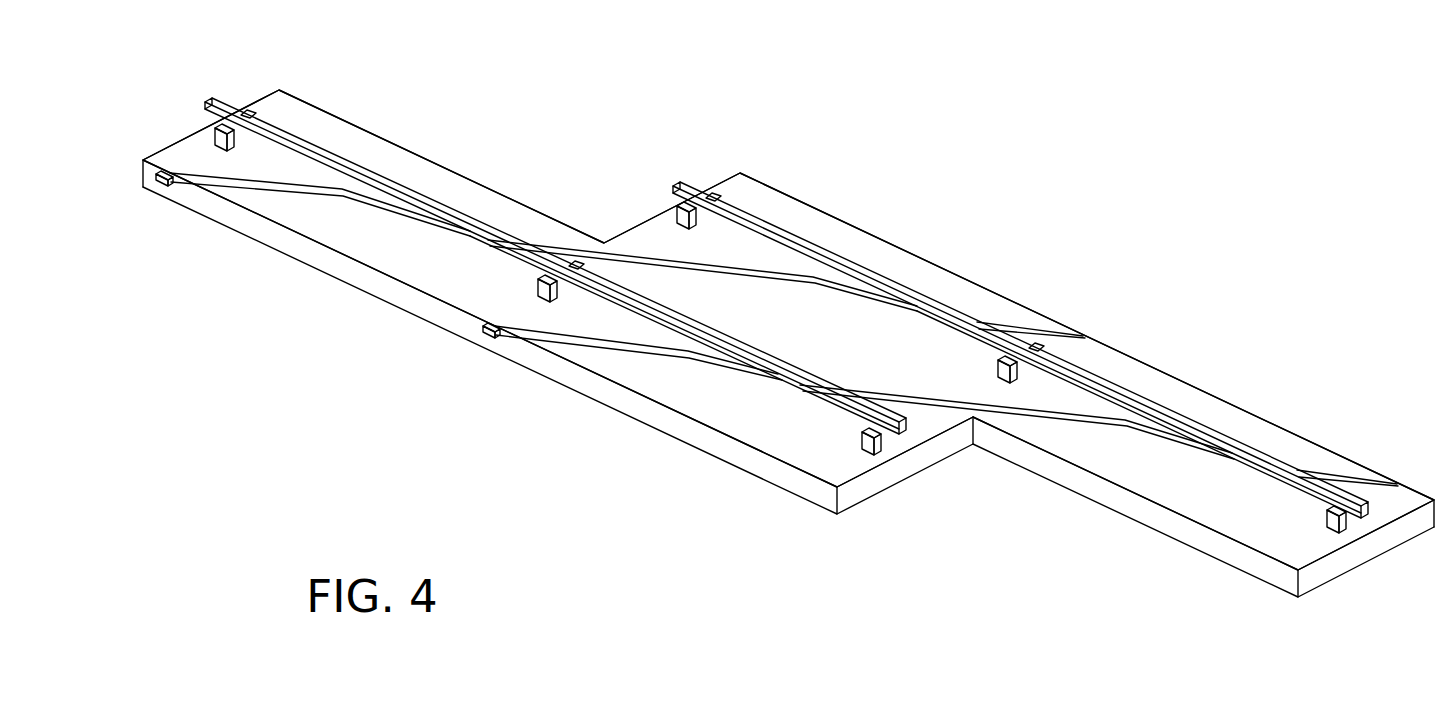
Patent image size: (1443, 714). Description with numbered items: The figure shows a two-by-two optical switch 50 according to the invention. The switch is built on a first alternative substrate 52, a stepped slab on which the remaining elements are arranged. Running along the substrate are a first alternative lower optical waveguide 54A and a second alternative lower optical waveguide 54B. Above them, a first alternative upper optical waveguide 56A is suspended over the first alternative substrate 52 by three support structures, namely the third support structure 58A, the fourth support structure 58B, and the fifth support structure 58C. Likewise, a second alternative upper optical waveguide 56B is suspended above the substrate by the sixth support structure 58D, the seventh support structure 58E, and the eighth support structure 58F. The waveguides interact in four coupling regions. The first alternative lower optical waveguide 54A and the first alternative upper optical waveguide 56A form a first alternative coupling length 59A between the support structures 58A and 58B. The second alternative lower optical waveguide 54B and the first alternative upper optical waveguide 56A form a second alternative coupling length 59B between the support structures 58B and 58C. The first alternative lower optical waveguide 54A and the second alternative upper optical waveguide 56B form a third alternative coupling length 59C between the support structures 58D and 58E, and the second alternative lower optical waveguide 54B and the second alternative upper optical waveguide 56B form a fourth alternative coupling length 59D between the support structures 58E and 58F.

The two-by-two optical switch 50 is at (755, 122).
The first alternative substrate 52 is at (1322, 578).
The first alternative lower optical waveguide 54A is at (197, 180).
The second alternative lower optical waveguide 54B is at (541, 336).
The first alternative upper optical waveguide 56A is at (272, 126).
The second alternative upper optical waveguide 56B is at (752, 218).
The third support structure 58A is at (215, 133).
The fourth support structure 58B is at (539, 291).
The fifth support structure 58C is at (863, 443).
The sixth support structure 58D is at (678, 213).
The seventh support structure 58E is at (999, 370).
The eighth support structure 58F is at (1328, 521).
The first alternative coupling length 59A is at (378, 224).
The second alternative coupling length 59B is at (708, 372).
The third alternative coupling length 59C is at (843, 302).
The fourth alternative coupling length 59D is at (1174, 460).